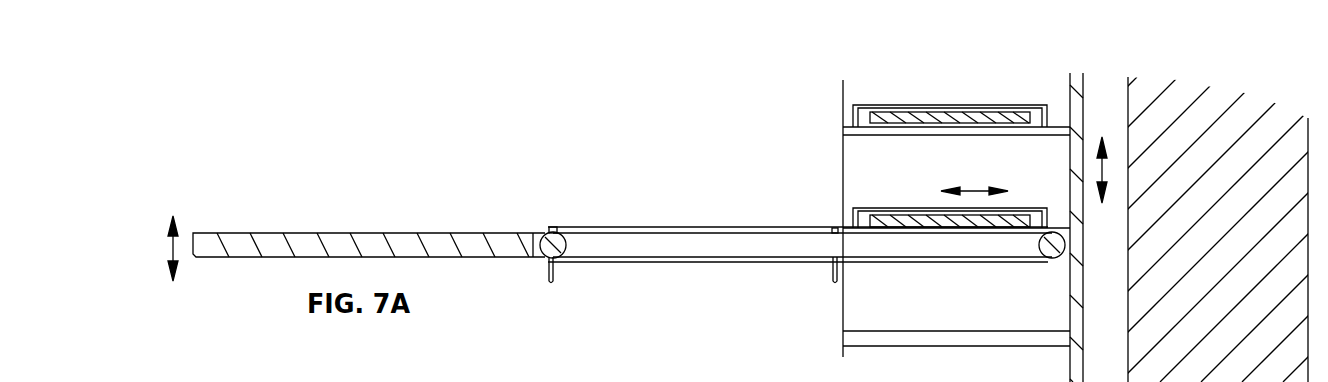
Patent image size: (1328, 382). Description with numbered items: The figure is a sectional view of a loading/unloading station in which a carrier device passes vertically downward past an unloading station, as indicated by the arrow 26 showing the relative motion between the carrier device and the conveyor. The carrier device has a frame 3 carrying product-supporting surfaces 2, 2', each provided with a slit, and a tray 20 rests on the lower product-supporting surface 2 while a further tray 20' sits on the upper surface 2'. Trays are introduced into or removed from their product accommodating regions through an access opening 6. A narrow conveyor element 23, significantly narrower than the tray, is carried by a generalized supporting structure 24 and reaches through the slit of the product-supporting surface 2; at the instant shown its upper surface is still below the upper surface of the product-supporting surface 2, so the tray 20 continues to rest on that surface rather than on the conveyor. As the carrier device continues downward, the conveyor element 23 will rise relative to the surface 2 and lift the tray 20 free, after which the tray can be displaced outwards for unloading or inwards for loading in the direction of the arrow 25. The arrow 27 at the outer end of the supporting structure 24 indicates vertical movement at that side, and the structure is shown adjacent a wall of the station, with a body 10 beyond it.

The product-supporting surface 2 is at (903, 197).
The upper guide plate 2' is at (898, 95).
The frame 3 is at (1080, 85).
The access opening 6 is at (828, 180).
The housing body 10 is at (1250, 115).
The tray 20 is at (950, 188).
The upper magnet 20' is at (935, 76).
The conveyor element 23 is at (686, 242).
The supporting structure 24 is at (337, 243).
The arrow 25 is at (978, 188).
The arrow 26 is at (1093, 170).
The strip movement arrow 27 is at (177, 250).